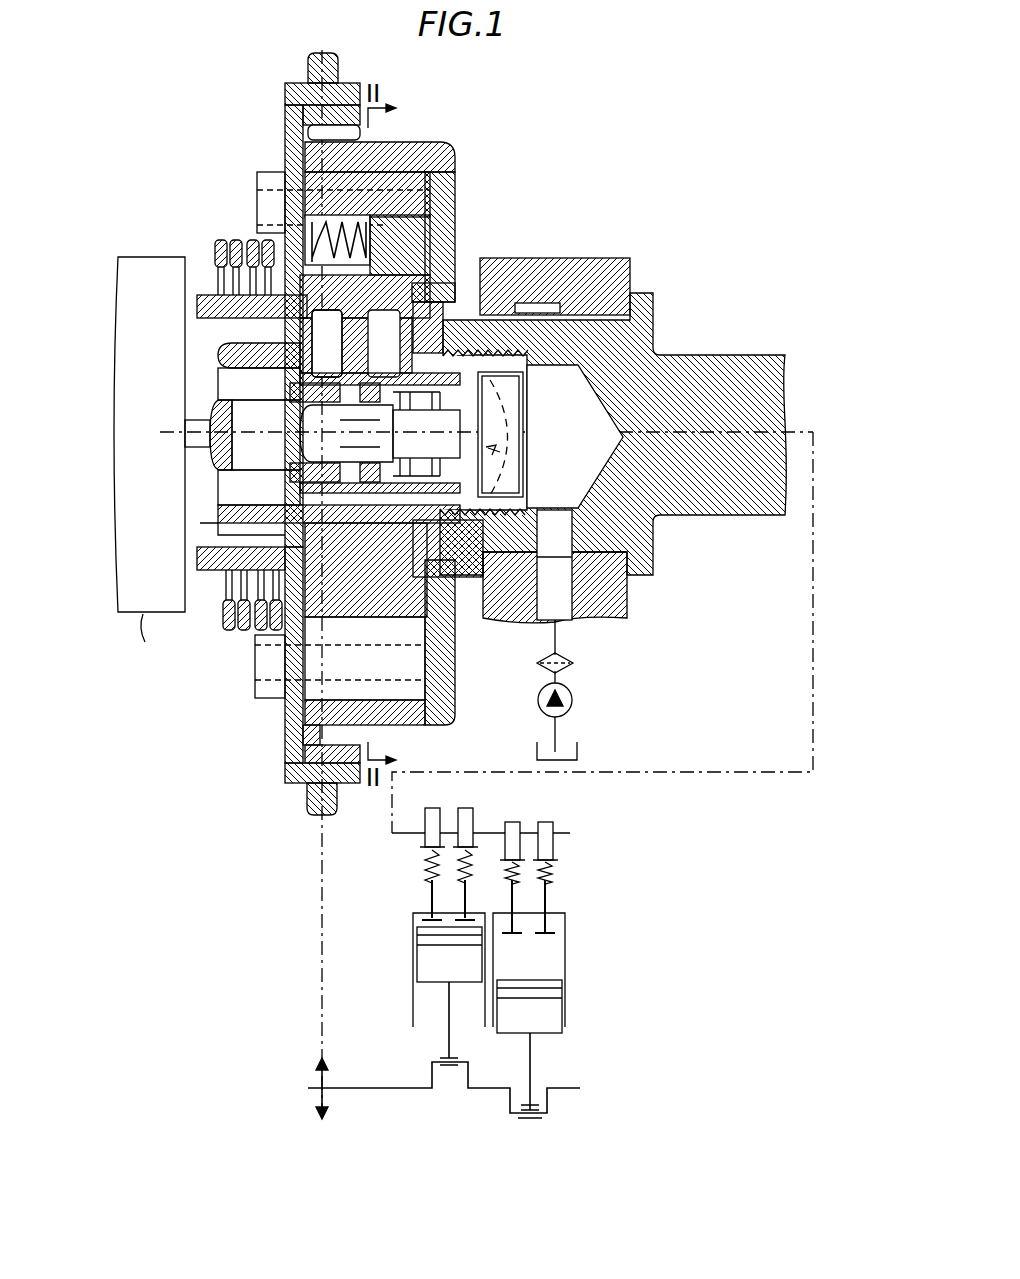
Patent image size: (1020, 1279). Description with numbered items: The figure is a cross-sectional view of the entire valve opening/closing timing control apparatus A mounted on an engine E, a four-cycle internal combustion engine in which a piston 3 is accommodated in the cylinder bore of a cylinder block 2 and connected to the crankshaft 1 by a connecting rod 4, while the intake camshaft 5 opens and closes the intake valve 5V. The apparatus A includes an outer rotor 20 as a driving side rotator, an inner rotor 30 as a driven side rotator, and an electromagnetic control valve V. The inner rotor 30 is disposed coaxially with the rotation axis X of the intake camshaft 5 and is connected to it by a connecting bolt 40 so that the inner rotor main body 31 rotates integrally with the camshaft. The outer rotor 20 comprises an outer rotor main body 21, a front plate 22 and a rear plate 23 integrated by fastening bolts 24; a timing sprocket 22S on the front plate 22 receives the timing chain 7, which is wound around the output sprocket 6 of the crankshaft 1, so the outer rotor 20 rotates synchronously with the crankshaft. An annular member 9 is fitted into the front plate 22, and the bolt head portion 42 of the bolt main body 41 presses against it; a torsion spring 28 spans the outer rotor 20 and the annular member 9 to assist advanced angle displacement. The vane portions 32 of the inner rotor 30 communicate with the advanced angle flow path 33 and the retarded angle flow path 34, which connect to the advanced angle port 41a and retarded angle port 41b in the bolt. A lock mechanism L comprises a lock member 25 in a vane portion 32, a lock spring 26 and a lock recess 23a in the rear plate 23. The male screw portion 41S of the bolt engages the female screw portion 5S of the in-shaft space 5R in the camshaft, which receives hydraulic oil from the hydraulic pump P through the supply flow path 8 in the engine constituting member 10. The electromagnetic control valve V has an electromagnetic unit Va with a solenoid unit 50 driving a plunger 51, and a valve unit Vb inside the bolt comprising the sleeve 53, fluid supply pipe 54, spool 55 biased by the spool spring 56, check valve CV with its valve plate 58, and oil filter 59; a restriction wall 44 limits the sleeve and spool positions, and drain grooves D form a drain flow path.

The crankshaft 1 is at (362, 1088).
The cylinder block 2 is at (412, 995).
The piston 3 is at (418, 958).
The connecting rod 4 is at (447, 1027).
The intake camshaft 5 is at (720, 360).
The intake valve 5V is at (462, 915).
The female screw portion 5S is at (515, 378).
The in-shaft space 5R is at (576, 463).
The output sprocket 6 is at (318, 1078).
The timing chain 7 is at (322, 940).
The supply flow path 8 is at (568, 598).
The annular member 9 is at (197, 560).
The engine constituting member 10 is at (628, 594).
The outer rotor 20 is at (283, 125).
The outer rotor main body 21 is at (385, 726).
The front plate 22 is at (285, 750).
The timing sprocket 22S is at (310, 815).
The rear plate 23 is at (455, 695).
The lock recess 23a is at (432, 250).
The fastening bolt 24 is at (300, 720).
The lock member 25 is at (430, 210).
The lock spring 26 is at (312, 235).
The torsion spring 28 is at (222, 613).
The inner rotor 30 is at (430, 640).
The inner rotor main body 31 is at (365, 620).
The vane portion 32 is at (372, 185).
The advanced angle flow path 33 is at (232, 300).
The retarded angle flow path 34 is at (432, 310).
The connecting bolt 40 is at (218, 348).
The bolt main body 41 is at (350, 345).
The advanced angle port 41a is at (300, 325).
The retarded angle port 41b is at (420, 322).
The male screw portion 41S is at (555, 286).
The bolt head portion 42 is at (215, 362).
The restriction wall 44 is at (285, 390).
The plunger 51 is at (193, 448).
The sleeve 53 is at (345, 500).
The fluid supply pipe 54 is at (296, 427).
The spool 55 is at (215, 405).
The spool spring 56 is at (425, 505).
The valve plate 58 is at (472, 432).
The oil filter 59 is at (512, 422).
The valve opening/closing timing control apparatus A is at (460, 135).
The engine E is at (768, 170).
The electromagnetic control valve V is at (152, 240).
The electromagnetic unit Va is at (146, 641).
The solenoid unit 50 is at (145, 677).
The lock mechanism L is at (350, 195).
The rotation axis X is at (478, 625).
The drain groove D is at (360, 500).
The valve unit Vb is at (385, 500).
The check valve CV is at (500, 452).
The hydraulic pump P is at (573, 700).